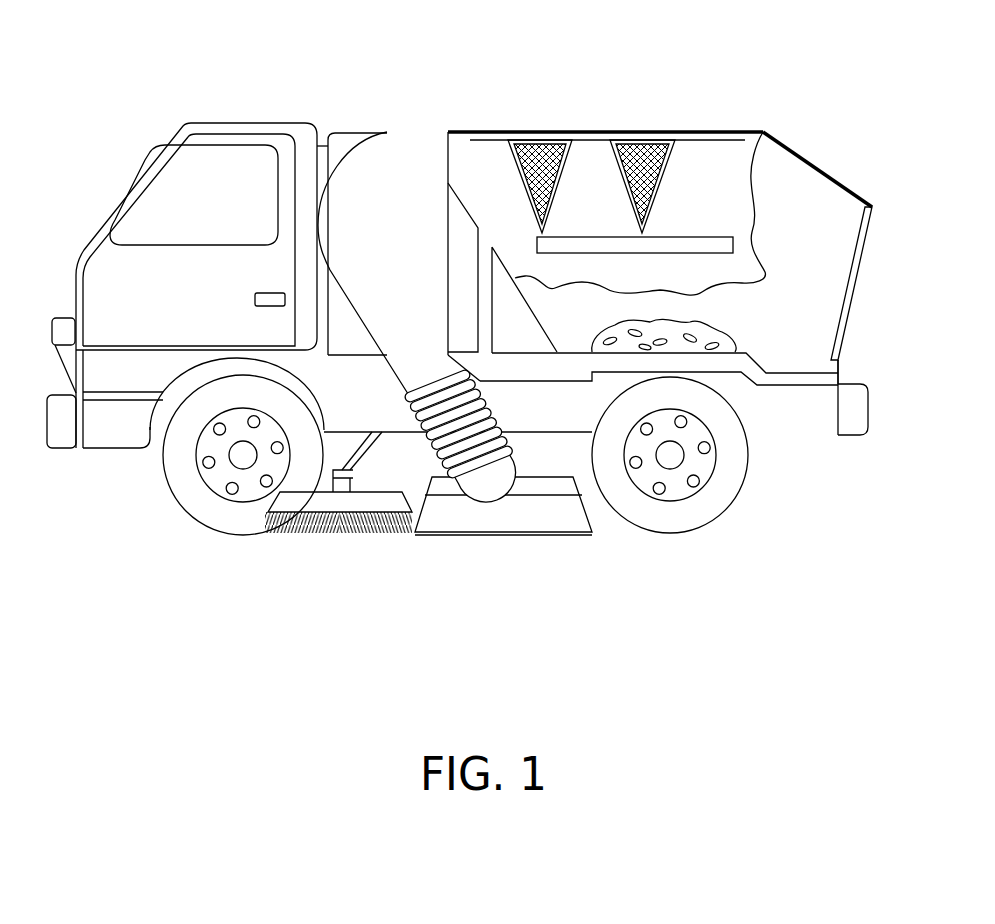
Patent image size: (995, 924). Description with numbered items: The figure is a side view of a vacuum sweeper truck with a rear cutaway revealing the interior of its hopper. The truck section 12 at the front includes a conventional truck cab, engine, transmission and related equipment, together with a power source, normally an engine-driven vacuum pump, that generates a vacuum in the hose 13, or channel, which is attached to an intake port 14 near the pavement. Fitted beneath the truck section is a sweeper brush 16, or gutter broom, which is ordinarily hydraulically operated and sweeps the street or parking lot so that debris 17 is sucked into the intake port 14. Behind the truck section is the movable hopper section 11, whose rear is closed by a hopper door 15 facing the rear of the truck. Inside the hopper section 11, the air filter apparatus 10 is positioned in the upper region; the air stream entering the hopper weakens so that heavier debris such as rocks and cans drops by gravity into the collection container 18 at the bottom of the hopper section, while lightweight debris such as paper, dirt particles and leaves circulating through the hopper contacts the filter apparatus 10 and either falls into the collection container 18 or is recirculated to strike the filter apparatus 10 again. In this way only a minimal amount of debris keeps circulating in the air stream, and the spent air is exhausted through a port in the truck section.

The air filter apparatus 10 is at (597, 107).
The hopper section 11 is at (803, 222).
The truck section 12 is at (183, 127).
The hose 13 is at (450, 428).
The intake port 14 is at (515, 485).
The hopper door 15 is at (860, 263).
The sweeper brush 16 is at (342, 525).
The debris 17 is at (723, 345).
The collection container 18 is at (828, 290).